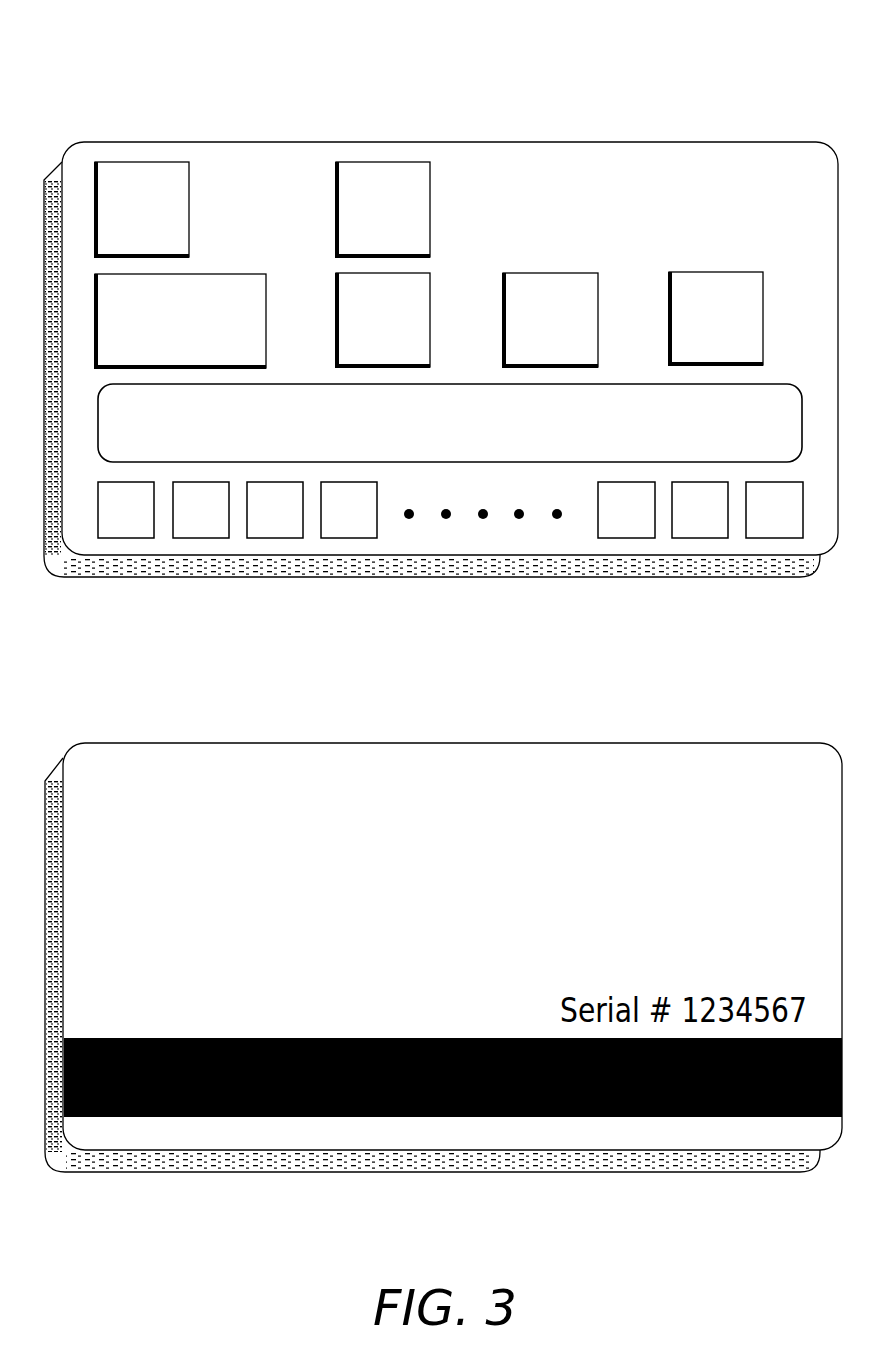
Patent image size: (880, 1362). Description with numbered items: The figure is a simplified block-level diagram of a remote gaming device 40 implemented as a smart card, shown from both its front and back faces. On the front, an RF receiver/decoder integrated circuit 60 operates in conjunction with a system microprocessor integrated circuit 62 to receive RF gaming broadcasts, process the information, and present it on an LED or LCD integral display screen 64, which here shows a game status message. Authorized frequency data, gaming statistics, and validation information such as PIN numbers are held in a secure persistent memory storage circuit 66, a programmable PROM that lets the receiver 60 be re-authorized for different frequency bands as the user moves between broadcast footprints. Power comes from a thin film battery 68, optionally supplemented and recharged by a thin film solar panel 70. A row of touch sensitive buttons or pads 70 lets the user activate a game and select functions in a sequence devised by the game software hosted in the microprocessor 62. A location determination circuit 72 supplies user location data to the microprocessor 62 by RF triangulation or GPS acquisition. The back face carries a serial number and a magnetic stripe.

The remote gaming device 40 is at (640, 110).
The RF receiver/decoder integrated circuit 60 is at (386, 170).
The system microprocessor integrated circuit 62 is at (577, 272).
The integral display screen 64 is at (778, 384).
The secure persistent memory storage circuit 66 is at (430, 302).
The thin film battery 68 is at (236, 283).
The touch sensitive buttons or pads 70 is at (152, 172).
The location determination circuit 72 is at (728, 272).